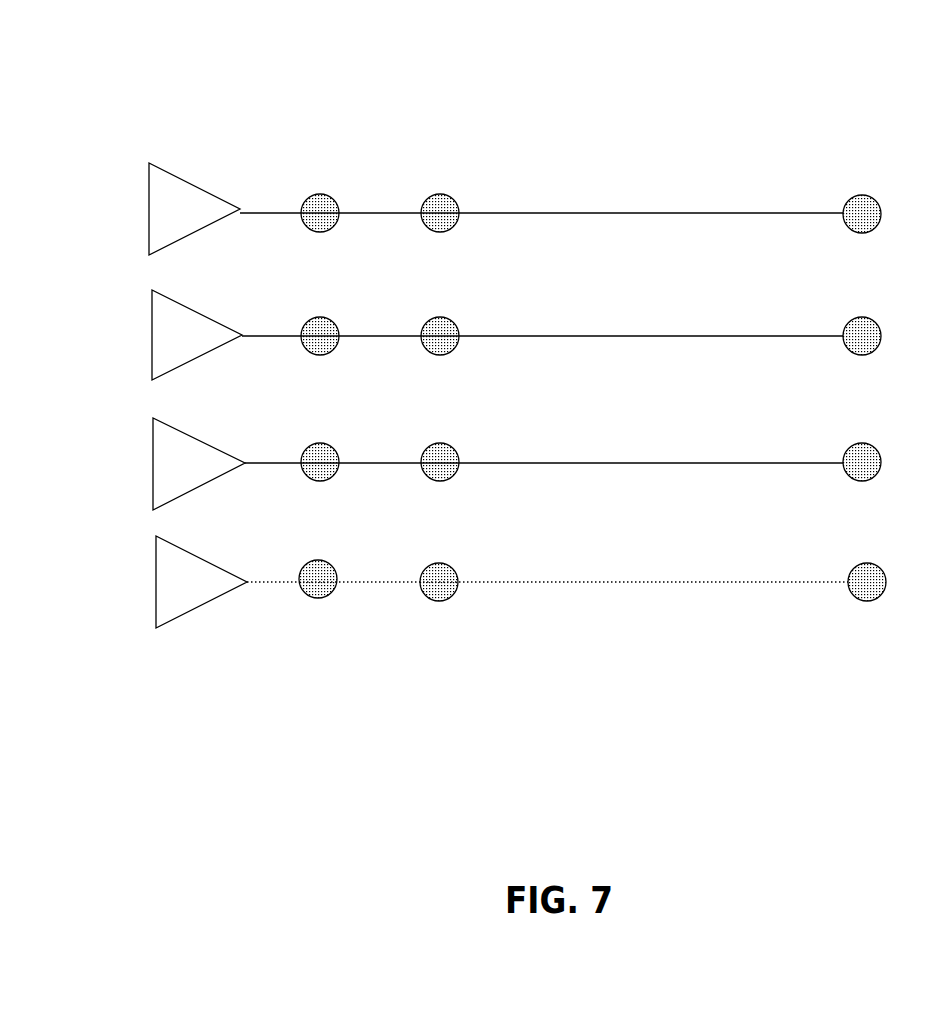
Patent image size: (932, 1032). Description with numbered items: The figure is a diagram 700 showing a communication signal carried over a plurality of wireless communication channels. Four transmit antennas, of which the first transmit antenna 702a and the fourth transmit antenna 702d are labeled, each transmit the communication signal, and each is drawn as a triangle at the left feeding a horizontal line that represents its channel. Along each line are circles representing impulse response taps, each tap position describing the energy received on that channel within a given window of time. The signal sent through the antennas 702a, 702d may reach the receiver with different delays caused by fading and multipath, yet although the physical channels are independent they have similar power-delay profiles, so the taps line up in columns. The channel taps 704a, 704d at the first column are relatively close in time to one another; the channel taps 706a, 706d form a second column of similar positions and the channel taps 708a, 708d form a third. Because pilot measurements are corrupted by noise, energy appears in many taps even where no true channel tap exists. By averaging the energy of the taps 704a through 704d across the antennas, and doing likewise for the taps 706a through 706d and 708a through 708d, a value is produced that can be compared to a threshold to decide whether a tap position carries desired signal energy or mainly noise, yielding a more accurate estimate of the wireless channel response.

The diagram of communication signal over wireless communication channels 700 is at (468, 375).
The transmit antenna 702a is at (160, 161).
The transmit antenna 702d is at (180, 627).
The channel tap 704a is at (313, 192).
The channel tap 704d is at (318, 602).
The channel tap position 706a is at (441, 192).
The channel tap position 706d is at (437, 604).
The channel tap position 708a is at (861, 195).
The channel tap position 708d is at (863, 603).